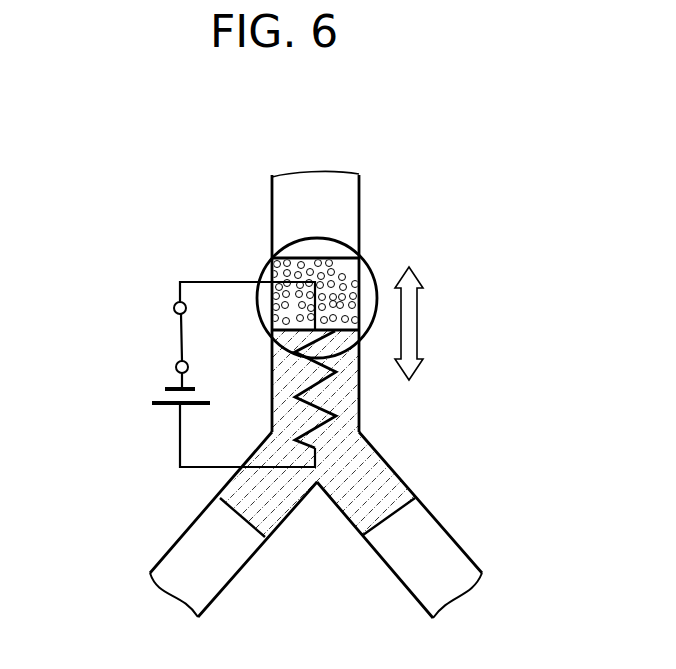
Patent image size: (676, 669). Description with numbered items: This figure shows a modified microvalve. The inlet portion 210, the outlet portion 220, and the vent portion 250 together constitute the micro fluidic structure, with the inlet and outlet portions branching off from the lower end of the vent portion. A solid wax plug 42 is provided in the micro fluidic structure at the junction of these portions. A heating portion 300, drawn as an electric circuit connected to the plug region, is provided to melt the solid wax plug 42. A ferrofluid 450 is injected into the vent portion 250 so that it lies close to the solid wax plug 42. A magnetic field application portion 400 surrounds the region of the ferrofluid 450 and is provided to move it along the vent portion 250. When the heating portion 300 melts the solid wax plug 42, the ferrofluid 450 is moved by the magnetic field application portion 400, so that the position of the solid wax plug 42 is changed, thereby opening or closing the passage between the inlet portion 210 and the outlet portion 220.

The solid wax plug 42 is at (347, 412).
The inlet portion 210 is at (155, 563).
The outlet portion 220 is at (478, 565).
The vent portion 250 is at (359, 210).
The heating portion 300 is at (198, 272).
The magnetic field application portion 400 is at (367, 260).
The ferrofluid 450 is at (290, 260).